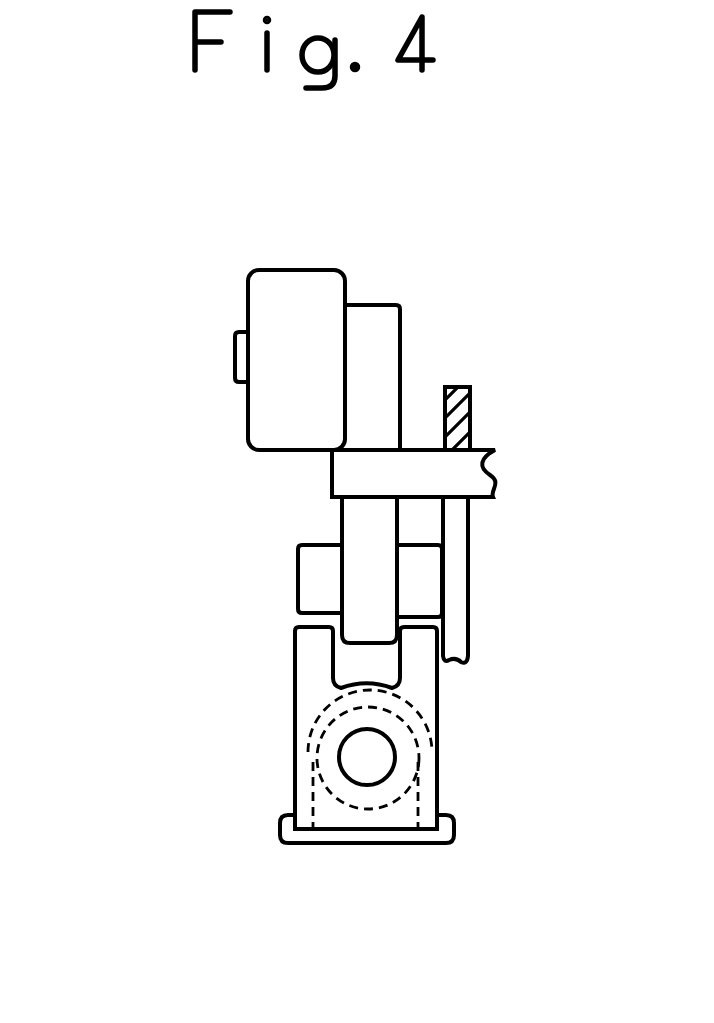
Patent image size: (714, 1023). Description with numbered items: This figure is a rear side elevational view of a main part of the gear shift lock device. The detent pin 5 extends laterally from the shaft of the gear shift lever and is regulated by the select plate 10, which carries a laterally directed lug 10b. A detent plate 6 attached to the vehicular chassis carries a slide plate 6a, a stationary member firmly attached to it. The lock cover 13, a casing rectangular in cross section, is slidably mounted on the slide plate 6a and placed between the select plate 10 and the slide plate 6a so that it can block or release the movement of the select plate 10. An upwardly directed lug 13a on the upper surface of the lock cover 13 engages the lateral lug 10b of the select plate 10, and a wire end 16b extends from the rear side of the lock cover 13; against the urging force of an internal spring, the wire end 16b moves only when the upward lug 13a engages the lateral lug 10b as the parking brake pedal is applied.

The detent pin 5 is at (458, 472).
The detent plate 6 is at (458, 407).
The slide plate 6a is at (312, 843).
The select plate 10 is at (380, 330).
The lateral lug 10b is at (310, 578).
The lock cover 13 is at (357, 725).
The upward lug 13a is at (312, 648).
The wire end 16b is at (372, 755).